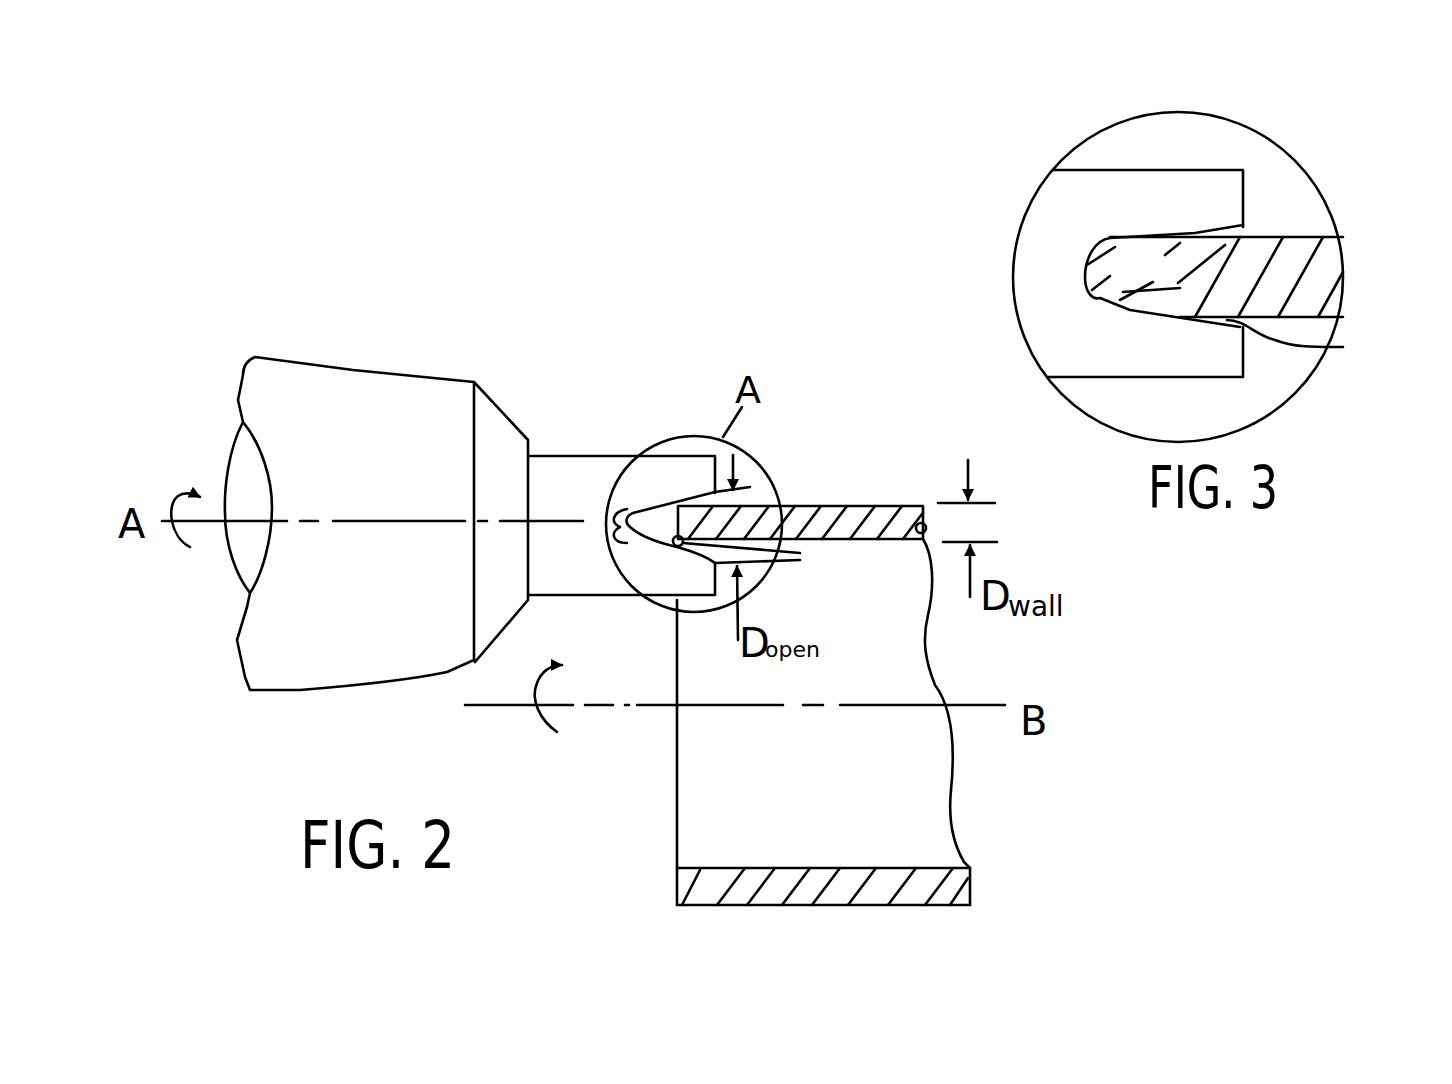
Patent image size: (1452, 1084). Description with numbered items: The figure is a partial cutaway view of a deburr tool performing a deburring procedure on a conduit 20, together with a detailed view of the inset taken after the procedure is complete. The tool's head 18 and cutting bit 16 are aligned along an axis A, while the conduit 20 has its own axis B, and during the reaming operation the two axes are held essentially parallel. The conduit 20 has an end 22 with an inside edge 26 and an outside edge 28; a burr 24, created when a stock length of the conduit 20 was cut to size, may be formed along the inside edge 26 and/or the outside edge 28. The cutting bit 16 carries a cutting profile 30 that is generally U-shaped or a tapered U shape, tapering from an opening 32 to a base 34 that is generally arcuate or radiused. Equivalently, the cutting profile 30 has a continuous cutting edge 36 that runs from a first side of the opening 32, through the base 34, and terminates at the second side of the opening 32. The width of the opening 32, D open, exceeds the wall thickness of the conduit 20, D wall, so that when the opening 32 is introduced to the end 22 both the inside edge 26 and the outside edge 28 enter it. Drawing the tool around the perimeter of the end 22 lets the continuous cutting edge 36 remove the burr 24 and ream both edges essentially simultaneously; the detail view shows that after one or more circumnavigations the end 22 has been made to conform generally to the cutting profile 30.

In FIG. 2, the cutting bit 16 is at (562, 455).
In FIG. 3, the cutting bit 16 is at (1143, 160).
In FIG. 2, the head 18 is at (353, 370).
In FIG. 2, the conduit 20 is at (830, 507).
In FIG. 3, the conduit 20 is at (1307, 237).
In FIG. 2, the end 22 is at (664, 740).
In FIG. 3, the end 22 is at (1151, 270).
In FIG. 2, the burr 24 is at (800, 556).
In FIG. 2, the inside edge 26 is at (684, 858).
In FIG. 2, the outside edge 28 is at (684, 912).
In FIG. 2, the cutting profile 30 is at (663, 495).
In FIG. 3, the cutting profile 30 is at (1195, 230).
In FIG. 2, the opening 32 is at (755, 494).
In FIG. 2, the base 34 is at (610, 510).
In FIG. 3, the continuous cutting edge 36 is at (1343, 347).